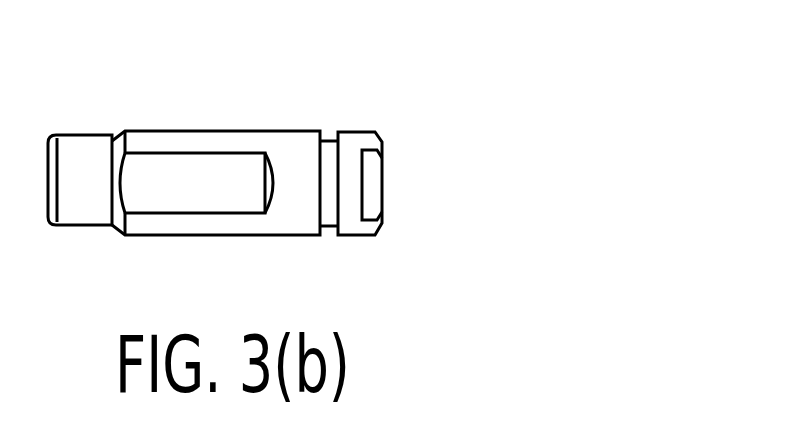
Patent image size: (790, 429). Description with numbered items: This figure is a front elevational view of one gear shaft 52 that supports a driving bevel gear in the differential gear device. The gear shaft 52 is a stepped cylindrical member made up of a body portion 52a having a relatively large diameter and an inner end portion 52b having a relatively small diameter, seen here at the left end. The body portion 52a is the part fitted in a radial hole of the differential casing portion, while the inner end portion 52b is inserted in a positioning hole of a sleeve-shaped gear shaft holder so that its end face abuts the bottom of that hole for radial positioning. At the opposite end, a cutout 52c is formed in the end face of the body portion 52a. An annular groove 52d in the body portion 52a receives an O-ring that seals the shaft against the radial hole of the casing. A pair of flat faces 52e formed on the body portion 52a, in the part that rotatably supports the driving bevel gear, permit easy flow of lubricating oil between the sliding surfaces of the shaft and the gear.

The gear shaft 52 is at (342, 100).
The body portion 52a is at (295, 218).
The inner end portion 52b is at (87, 212).
The cutout 52c is at (372, 182).
The annular groove 52d is at (328, 228).
The flat faces 52e is at (204, 178).